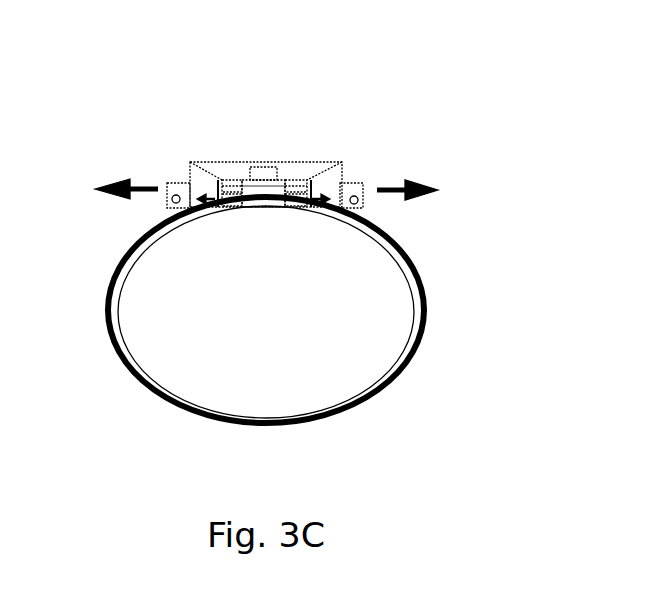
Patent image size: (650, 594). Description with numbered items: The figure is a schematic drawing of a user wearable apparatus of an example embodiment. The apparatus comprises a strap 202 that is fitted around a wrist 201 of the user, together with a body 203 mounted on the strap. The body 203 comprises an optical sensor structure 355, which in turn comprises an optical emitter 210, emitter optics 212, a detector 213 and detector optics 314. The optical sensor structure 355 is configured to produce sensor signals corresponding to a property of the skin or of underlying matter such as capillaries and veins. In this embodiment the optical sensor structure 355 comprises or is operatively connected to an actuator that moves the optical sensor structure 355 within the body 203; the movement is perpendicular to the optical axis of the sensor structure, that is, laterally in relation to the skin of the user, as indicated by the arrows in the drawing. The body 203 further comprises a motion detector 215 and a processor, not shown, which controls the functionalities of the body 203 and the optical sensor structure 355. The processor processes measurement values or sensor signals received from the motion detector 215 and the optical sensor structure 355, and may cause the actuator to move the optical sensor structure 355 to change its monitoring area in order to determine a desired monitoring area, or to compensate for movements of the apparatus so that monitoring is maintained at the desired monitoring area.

The wrist 201 is at (323, 397).
The strap 202 is at (392, 370).
The body 203 is at (335, 85).
The optical emitter 210 is at (307, 182).
The emitter optics 212 is at (341, 183).
The detector 213 is at (222, 182).
The motion detector 215 is at (263, 167).
The detector optics 314 is at (189, 183).
The optical sensor structure 355 is at (243, 184).